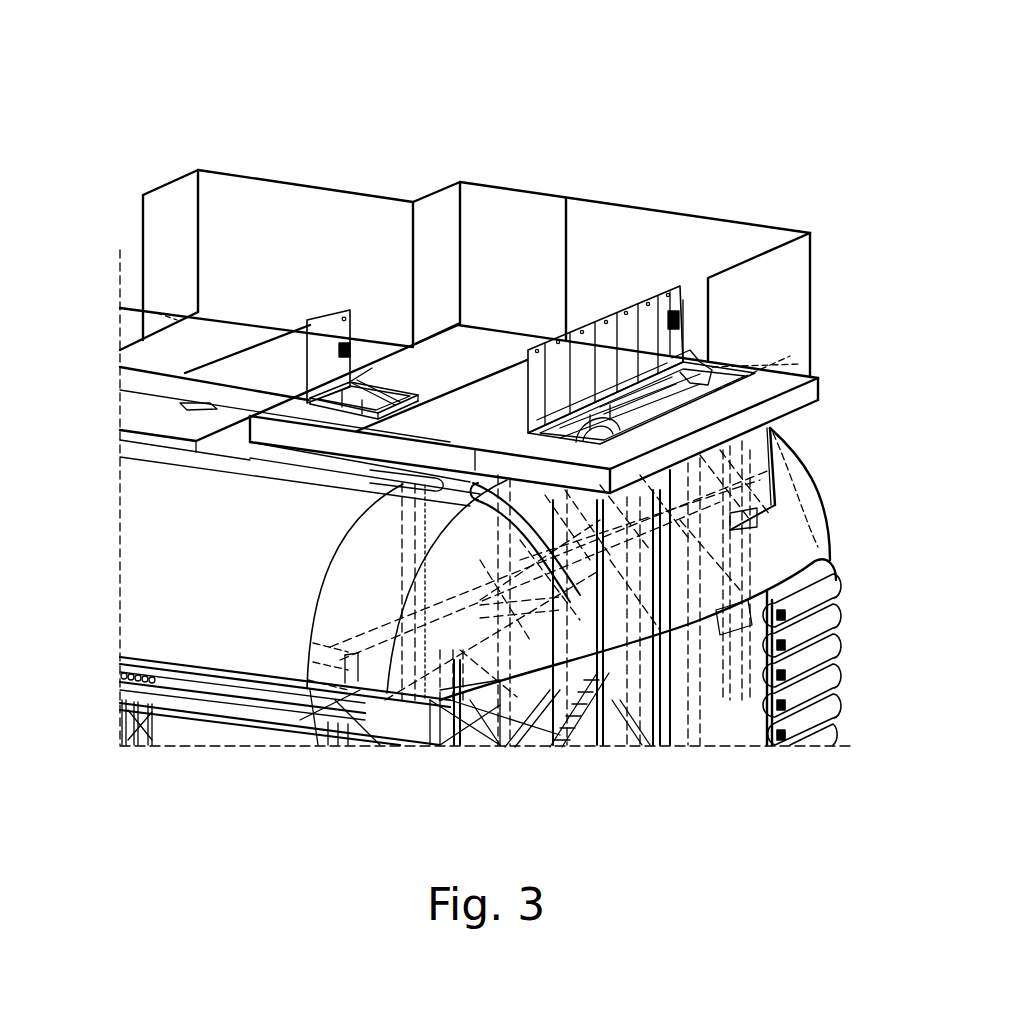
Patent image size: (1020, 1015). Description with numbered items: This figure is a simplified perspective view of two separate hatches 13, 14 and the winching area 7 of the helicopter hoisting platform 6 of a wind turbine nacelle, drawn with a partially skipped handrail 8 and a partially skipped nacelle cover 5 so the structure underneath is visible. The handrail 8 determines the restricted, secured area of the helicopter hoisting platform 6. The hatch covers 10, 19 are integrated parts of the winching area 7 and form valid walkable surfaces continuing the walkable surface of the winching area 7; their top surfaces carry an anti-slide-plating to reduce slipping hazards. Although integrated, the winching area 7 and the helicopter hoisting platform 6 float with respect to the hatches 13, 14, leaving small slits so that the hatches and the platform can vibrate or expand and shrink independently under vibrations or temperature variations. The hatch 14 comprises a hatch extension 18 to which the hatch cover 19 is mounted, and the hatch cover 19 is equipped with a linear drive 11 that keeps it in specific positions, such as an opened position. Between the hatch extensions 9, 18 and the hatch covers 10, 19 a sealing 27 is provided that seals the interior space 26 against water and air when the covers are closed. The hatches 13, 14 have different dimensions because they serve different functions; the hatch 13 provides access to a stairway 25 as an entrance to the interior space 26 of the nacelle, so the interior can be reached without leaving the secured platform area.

The nacelle cover 5 is at (157, 594).
The helicopter hoisting platform 6 is at (826, 260).
The winching area 7 is at (478, 348).
The handrail 8 is at (770, 228).
The hatch extension 9 is at (697, 385).
The hatch cover 10 is at (650, 313).
The linear drive 11 is at (700, 390).
The hatch 13 is at (548, 441).
The hatch 14 is at (322, 412).
The hatch extension 18 is at (362, 400).
The hatch cover 19 is at (323, 330).
The stairway 25 is at (712, 468).
The interior space 26 is at (720, 727).
The sealing 27 is at (400, 398).